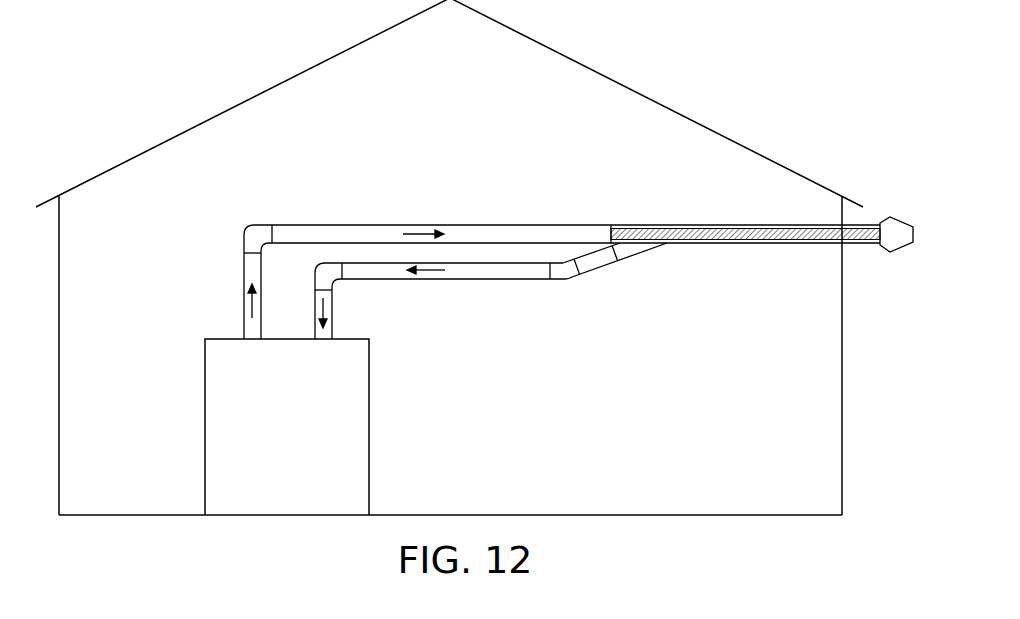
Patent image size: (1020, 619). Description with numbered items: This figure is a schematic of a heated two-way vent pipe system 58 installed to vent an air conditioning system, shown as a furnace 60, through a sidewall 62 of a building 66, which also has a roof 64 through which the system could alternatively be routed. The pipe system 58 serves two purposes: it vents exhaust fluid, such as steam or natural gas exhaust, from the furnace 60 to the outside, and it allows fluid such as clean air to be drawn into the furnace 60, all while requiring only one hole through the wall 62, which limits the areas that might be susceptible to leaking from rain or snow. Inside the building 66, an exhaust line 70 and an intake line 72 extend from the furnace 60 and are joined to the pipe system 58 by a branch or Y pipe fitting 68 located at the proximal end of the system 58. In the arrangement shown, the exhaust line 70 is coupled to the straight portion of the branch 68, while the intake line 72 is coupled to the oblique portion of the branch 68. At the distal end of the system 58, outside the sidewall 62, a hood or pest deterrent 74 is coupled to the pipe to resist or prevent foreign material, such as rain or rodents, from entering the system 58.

The heated two-way vent pipe system 58 is at (737, 228).
The furnace 60 is at (277, 454).
The sidewall 62 is at (842, 395).
The roof 64 is at (449, 103).
The building 66 is at (82, 504).
The branch or Y pipe fitting 68 is at (627, 250).
The exhaust line 70 is at (412, 225).
The intake line 72 is at (455, 278).
The hood or pest deterrent 74 is at (900, 225).